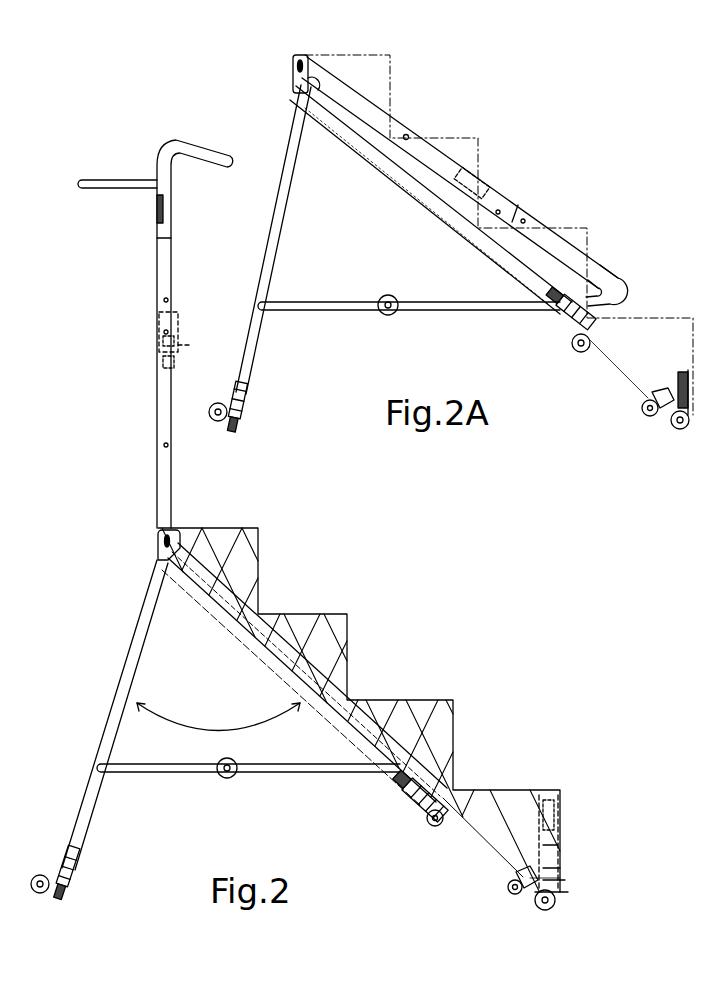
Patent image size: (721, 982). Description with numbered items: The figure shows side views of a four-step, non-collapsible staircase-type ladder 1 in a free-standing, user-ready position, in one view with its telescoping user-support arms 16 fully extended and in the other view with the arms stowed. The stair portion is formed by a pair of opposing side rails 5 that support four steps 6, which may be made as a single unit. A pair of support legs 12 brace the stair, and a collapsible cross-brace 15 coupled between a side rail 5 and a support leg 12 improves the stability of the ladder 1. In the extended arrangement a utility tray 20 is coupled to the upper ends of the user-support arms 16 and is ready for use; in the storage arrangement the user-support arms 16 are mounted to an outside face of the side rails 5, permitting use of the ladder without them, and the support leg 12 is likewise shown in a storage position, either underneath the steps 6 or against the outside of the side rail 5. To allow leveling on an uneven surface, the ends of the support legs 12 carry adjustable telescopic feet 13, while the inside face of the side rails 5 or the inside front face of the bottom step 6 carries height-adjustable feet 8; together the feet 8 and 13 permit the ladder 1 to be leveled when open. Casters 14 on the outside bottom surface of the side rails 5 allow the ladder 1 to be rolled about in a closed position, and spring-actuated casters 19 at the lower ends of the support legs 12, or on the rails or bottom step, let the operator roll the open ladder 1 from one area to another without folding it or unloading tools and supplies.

In FIG. 2A, the ladder 1 is at (558, 206).
In FIG. 2, the side rail 5 is at (229, 698).
In FIG. 2A, the side rail 5 is at (470, 245).
In FIG. 2A, the step 6 is at (437, 120).
In FIG. 2, the adjustable telescopic feet 8 is at (563, 893).
In FIG. 2, the support leg 12 is at (116, 705).
In FIG. 2, the adjustable telescopic feet 13 is at (66, 882).
In FIG. 2A, the adjustable telescopic feet 13 is at (240, 418).
In FIG. 2, the caster 14 is at (513, 877).
In FIG. 2A, the caster 14 is at (648, 401).
In FIG. 2, the collapsible cross-brace 15 is at (200, 773).
In FIG. 2, the telescoping user-support arm 16 is at (178, 262).
In FIG. 2A, the telescoping user-support arm 16 is at (597, 273).
In FIG. 2, the spring-actuated caster 19 is at (31, 887).
In FIG. 2, the utility tray 20 is at (57, 181).